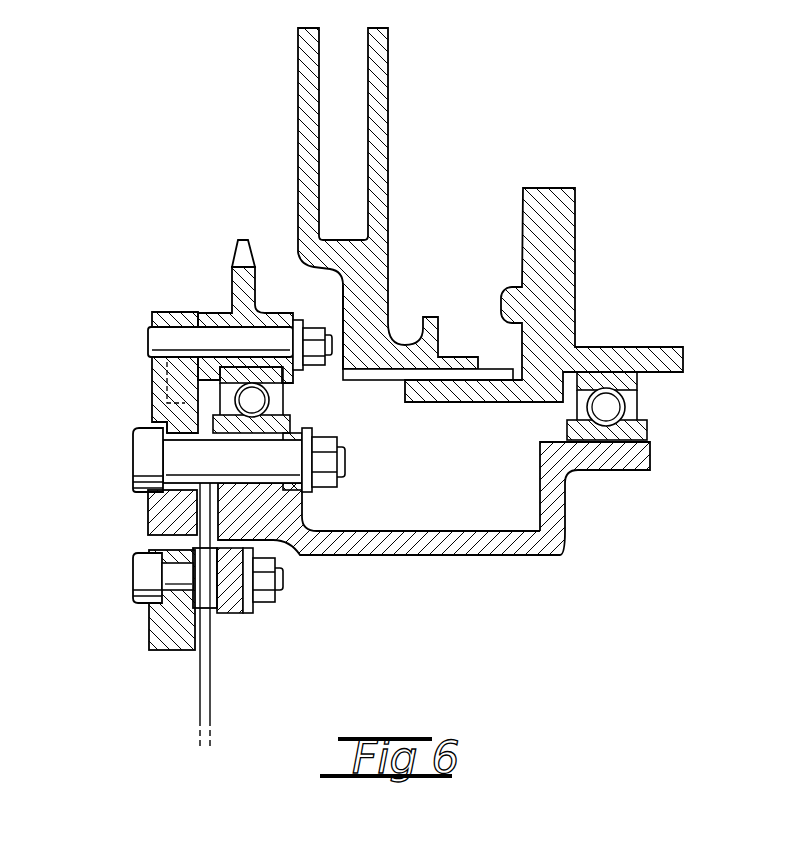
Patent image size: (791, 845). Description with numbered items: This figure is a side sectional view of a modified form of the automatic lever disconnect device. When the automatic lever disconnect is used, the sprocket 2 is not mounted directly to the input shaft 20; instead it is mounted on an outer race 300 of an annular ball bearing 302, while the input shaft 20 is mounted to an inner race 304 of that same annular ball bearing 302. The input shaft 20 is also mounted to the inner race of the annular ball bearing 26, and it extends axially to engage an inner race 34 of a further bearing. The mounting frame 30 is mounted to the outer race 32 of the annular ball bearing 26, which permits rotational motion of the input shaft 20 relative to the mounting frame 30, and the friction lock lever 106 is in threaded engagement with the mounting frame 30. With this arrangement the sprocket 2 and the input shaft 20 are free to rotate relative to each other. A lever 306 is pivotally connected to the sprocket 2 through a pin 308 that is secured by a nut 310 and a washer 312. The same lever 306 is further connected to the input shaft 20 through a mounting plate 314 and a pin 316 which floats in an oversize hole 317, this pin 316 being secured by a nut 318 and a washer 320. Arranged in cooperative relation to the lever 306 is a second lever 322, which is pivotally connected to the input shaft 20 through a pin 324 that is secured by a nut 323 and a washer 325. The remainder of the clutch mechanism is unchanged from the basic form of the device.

The friction lock lever 106 is at (388, 62).
The nut 310 is at (323, 326).
The mounting frame 30 is at (577, 267).
The outer race 32 is at (618, 370).
The annular ball bearing 26 is at (638, 412).
The input shaft 20 is at (308, 522).
The inner race 34 is at (618, 447).
The lever 306 is at (177, 312).
The oversize hole 317 is at (150, 422).
The outer race 300 is at (232, 333).
The sprocket 2 is at (243, 240).
The pin 308 is at (150, 335).
The washer 312 is at (322, 326).
The annular ball bearing 302 is at (283, 403).
The inner race 304 is at (245, 442).
The pin 316 is at (148, 452).
The washer 320 is at (307, 430).
The nut 318 is at (340, 482).
The mounting plate 314 is at (198, 508).
The washer 325 is at (252, 615).
The lever 322 is at (149, 652).
The pin 324 is at (133, 585).
The nut 323 is at (275, 603).